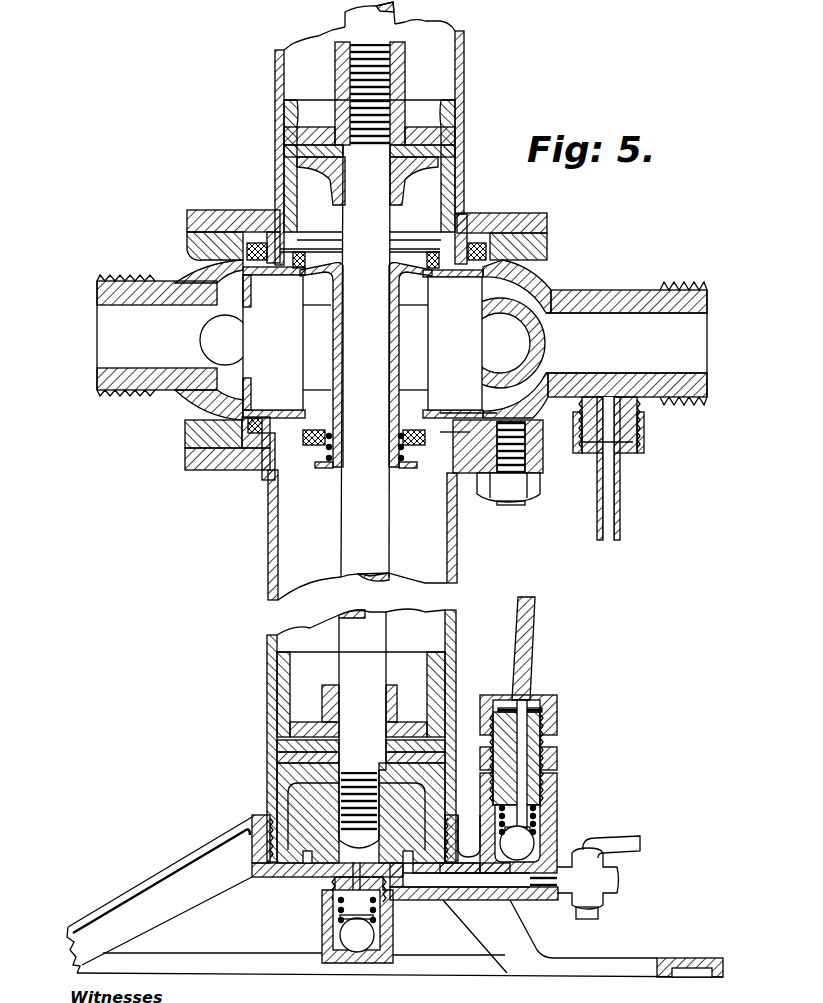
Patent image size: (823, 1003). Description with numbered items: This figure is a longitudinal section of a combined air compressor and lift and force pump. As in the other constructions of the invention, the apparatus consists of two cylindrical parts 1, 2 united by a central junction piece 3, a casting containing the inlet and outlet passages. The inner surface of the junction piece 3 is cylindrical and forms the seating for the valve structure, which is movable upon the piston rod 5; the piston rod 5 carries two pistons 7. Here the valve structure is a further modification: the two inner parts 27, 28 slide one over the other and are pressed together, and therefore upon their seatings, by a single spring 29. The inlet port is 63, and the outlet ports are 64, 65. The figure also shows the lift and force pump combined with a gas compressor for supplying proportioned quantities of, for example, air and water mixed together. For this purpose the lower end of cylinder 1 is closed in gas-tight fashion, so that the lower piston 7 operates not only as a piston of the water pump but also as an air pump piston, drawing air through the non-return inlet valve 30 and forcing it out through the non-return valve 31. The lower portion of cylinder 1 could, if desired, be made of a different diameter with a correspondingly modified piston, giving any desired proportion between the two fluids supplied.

The cylindrical part 1 is at (268, 535).
The cylindrical part 2 is at (283, 128).
The central junction piece 3 is at (190, 266).
The piston rod 5 is at (380, 542).
The piston 7 is at (284, 100).
The inner valve part 27 is at (298, 446).
The inner valve part 28 is at (340, 297).
The spring 29 is at (410, 460).
The non-return inlet valve 30 is at (358, 955).
The non-return valve 31 is at (558, 828).
The inlet port 63 is at (372, 343).
The outlet port 64 is at (508, 452).
The outlet port 65 is at (380, 335).